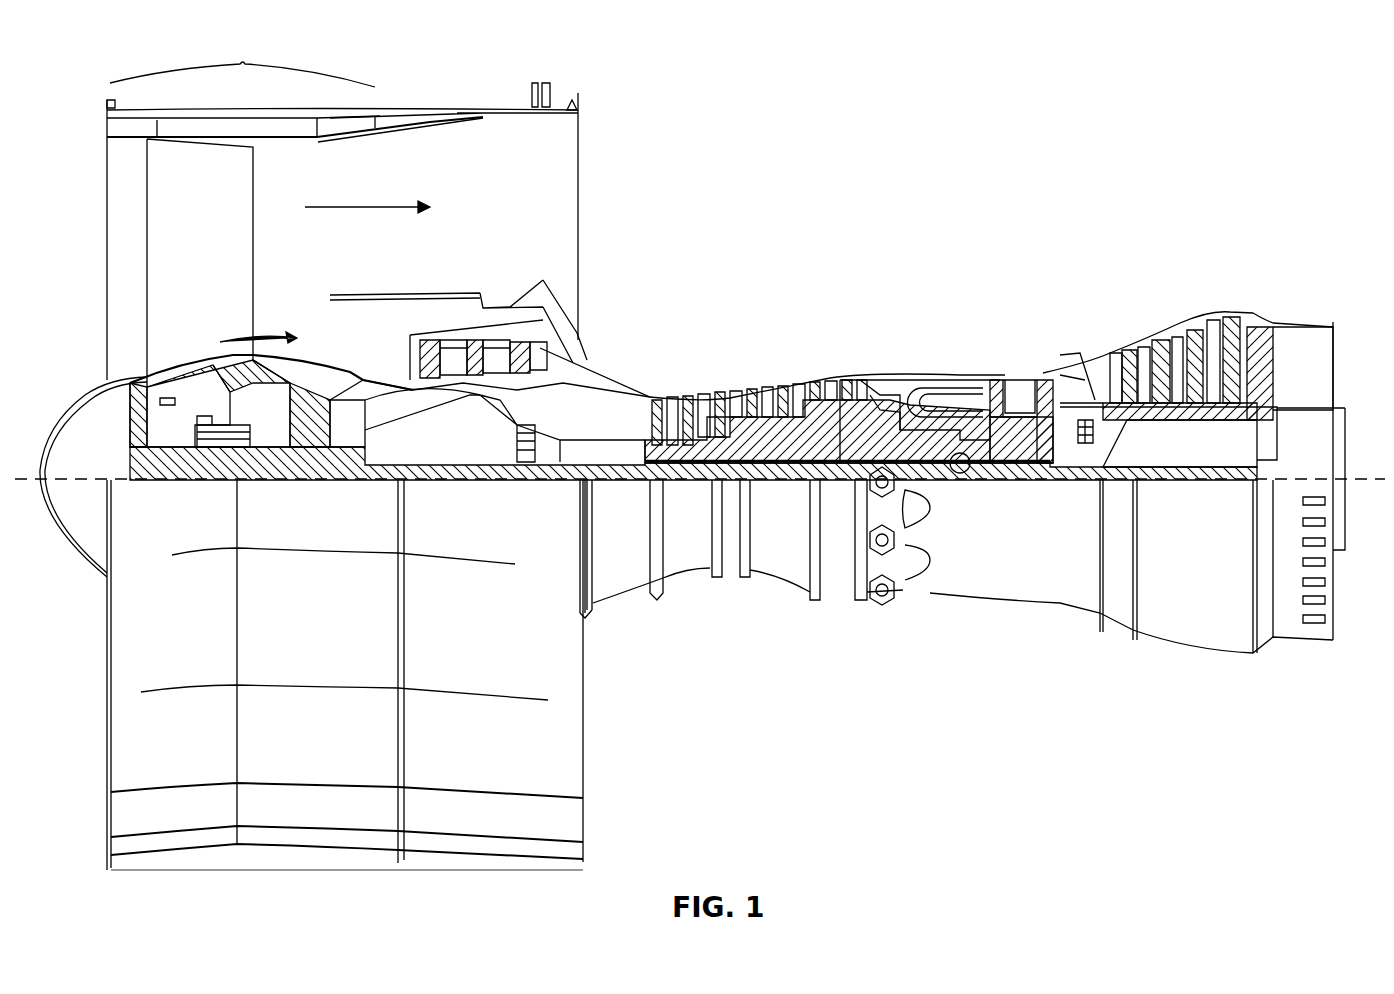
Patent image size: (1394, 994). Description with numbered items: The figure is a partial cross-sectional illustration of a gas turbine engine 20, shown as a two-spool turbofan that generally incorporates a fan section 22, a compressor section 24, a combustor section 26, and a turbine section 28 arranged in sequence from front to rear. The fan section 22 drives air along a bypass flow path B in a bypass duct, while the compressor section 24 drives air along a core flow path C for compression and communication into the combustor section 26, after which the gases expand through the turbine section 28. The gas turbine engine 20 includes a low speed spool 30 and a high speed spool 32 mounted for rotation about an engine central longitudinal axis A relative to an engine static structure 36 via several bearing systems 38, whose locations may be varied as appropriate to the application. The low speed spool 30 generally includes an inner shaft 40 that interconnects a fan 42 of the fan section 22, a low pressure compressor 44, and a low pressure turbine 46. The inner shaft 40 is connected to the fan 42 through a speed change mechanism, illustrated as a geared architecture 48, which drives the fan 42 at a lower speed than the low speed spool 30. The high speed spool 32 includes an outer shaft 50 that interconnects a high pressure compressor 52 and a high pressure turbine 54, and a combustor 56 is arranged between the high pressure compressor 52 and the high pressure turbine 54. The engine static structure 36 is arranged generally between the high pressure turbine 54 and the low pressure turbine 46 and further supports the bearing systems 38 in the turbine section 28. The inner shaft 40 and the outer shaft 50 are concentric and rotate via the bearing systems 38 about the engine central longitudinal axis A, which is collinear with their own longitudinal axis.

The gas turbine engine 20 is at (1152, 148).
The fan section 22 is at (342, 206).
The compressor section 24 is at (770, 337).
The combustor section 26 is at (935, 337).
The turbine section 28 is at (1083, 318).
The low speed spool 30 is at (803, 483).
The high speed spool 32 is at (850, 427).
The engine static structure 36 is at (843, 600).
The bearing systems 38 is at (213, 447).
The inner shaft 40 is at (593, 473).
The fan 42 is at (228, 242).
The low pressure compressor 44 is at (503, 352).
The low pressure turbine 46 is at (1187, 333).
The geared architecture 48 is at (343, 447).
The outer shaft 50 is at (963, 467).
The high pressure compressor 52 is at (760, 450).
The high pressure turbine 54 is at (1022, 375).
The combustor 56 is at (945, 397).
The engine central longitudinal axis A is at (1358, 478).
The bypass flow path B is at (370, 207).
The core flow path C is at (230, 335).